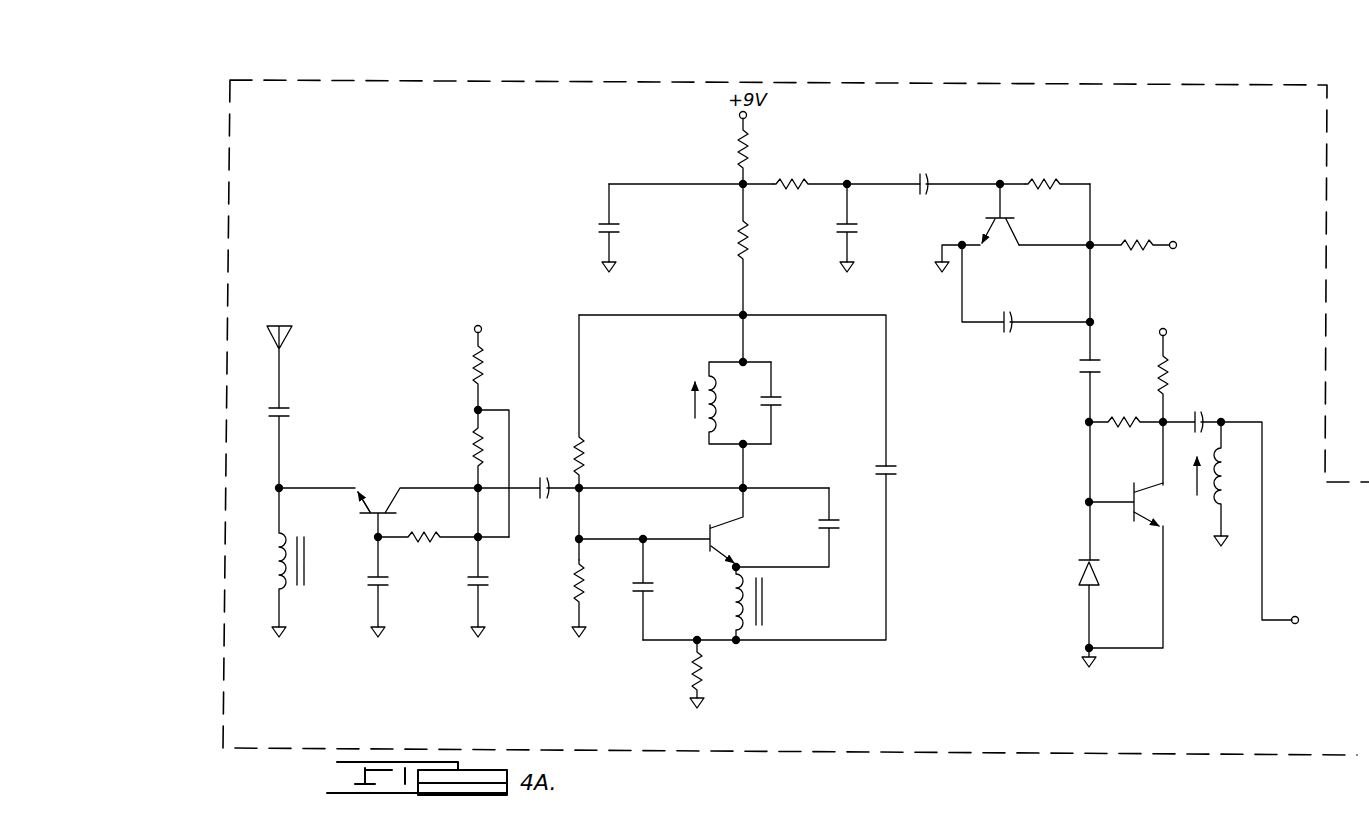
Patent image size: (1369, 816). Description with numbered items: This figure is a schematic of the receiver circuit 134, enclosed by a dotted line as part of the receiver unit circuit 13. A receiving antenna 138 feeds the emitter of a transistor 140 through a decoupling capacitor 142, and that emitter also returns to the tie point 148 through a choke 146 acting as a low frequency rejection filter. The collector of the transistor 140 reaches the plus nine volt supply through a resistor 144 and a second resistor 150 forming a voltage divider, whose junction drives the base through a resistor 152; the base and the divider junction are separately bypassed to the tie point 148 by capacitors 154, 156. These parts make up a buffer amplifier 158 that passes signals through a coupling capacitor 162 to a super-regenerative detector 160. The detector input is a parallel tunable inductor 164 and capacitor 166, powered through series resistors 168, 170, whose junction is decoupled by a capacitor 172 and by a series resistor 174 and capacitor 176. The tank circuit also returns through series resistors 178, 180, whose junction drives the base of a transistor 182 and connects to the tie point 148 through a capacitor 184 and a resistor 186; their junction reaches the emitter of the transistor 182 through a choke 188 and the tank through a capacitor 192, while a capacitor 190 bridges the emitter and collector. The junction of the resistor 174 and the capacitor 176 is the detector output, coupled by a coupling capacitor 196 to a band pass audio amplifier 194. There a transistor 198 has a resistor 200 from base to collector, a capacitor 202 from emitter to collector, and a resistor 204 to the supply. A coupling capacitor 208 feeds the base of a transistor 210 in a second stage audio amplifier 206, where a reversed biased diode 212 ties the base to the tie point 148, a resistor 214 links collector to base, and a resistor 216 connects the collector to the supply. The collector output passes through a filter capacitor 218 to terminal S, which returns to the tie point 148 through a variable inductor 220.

The receiver unit circuit 13 is at (294, 74).
The receiver circuit 134 is at (549, 141).
The receiving antenna 138 is at (293, 330).
The transistor 140 is at (378, 500).
The decoupling capacitor 142 is at (290, 414).
The resistor 144 is at (476, 432).
The choke 146 is at (284, 590).
The tie point 148 is at (613, 274).
The second resistor 150 is at (476, 358).
The resistor 152 is at (428, 534).
The capacitor 154 is at (388, 582).
The capacitor 156 is at (470, 580).
The buffer amplifier 158 is at (506, 374).
The super-regenerative detector 160 is at (900, 524).
The coupling capacitor 162 is at (528, 515).
The tunable inductor 164 is at (707, 425).
The capacitor 166 is at (778, 402).
The resistor 168 is at (740, 242).
The resistor 170 is at (738, 152).
The capacitor 172 is at (618, 226).
The resistor 174 is at (794, 181).
The capacitor 176 is at (858, 230).
The resistor 178 is at (585, 442).
The resistor 180 is at (582, 582).
The transistor 182 is at (708, 532).
The capacitor 184 is at (656, 588).
The resistor 186 is at (705, 668).
The choke 188 is at (735, 602).
The capacitor 190 is at (826, 526).
The capacitor 192 is at (898, 470).
The band pass audio amplifier 194 is at (1127, 179).
The coupling capacitor 196 is at (929, 170).
The transistor 198 is at (998, 232).
The resistor 200 is at (1042, 182).
The capacitor 202 is at (1005, 335).
The resistor 204 is at (1135, 247).
The second stage audio amplifier 206 is at (1077, 445).
The coupling capacitor 208 is at (1080, 368).
The transistor 210 is at (1130, 496).
The reversed biased diode 212 is at (1078, 582).
The resistor 214 is at (1118, 420).
The resistor 216 is at (1170, 388).
The filter capacitor 218 is at (1198, 414).
The variable inductor 220 is at (1226, 470).